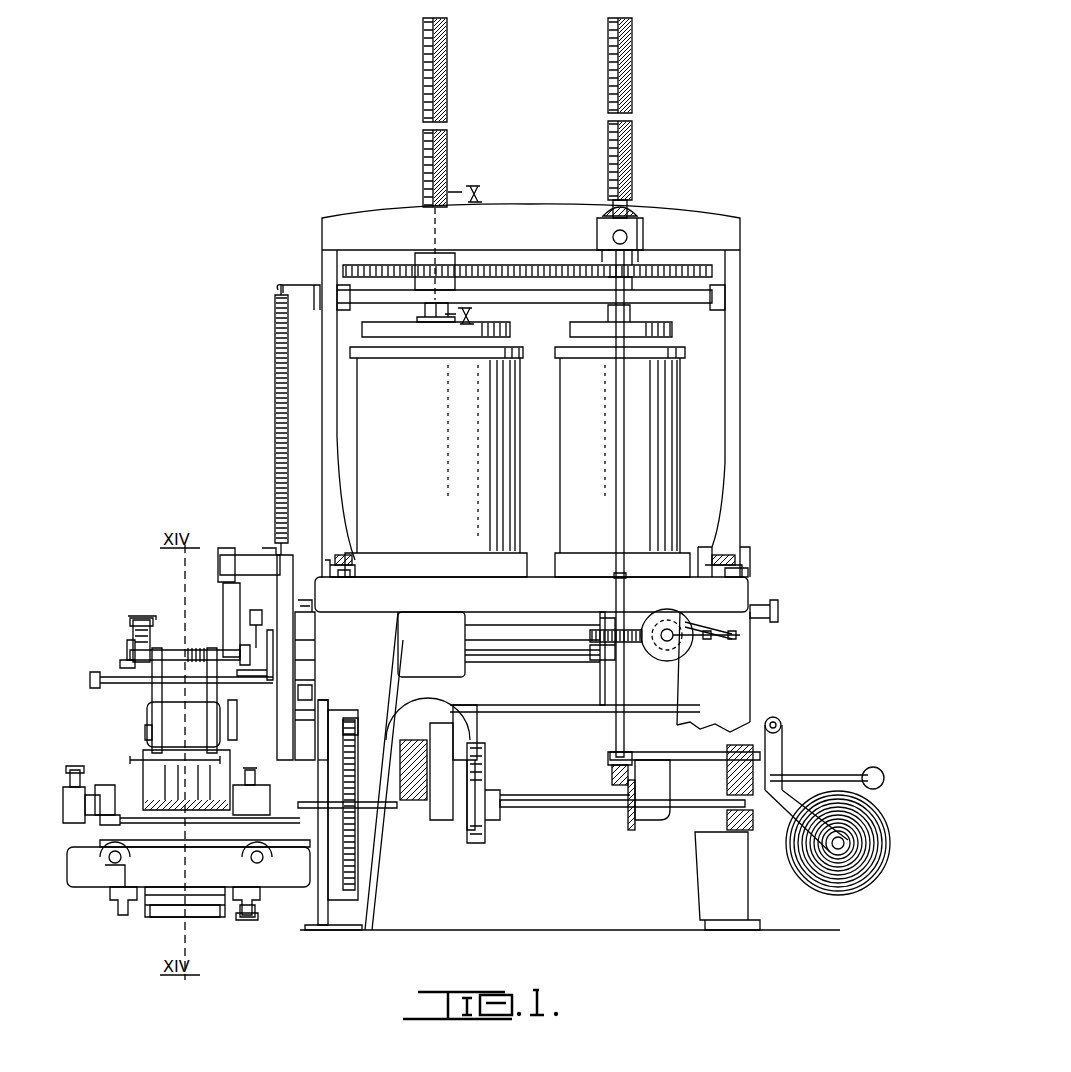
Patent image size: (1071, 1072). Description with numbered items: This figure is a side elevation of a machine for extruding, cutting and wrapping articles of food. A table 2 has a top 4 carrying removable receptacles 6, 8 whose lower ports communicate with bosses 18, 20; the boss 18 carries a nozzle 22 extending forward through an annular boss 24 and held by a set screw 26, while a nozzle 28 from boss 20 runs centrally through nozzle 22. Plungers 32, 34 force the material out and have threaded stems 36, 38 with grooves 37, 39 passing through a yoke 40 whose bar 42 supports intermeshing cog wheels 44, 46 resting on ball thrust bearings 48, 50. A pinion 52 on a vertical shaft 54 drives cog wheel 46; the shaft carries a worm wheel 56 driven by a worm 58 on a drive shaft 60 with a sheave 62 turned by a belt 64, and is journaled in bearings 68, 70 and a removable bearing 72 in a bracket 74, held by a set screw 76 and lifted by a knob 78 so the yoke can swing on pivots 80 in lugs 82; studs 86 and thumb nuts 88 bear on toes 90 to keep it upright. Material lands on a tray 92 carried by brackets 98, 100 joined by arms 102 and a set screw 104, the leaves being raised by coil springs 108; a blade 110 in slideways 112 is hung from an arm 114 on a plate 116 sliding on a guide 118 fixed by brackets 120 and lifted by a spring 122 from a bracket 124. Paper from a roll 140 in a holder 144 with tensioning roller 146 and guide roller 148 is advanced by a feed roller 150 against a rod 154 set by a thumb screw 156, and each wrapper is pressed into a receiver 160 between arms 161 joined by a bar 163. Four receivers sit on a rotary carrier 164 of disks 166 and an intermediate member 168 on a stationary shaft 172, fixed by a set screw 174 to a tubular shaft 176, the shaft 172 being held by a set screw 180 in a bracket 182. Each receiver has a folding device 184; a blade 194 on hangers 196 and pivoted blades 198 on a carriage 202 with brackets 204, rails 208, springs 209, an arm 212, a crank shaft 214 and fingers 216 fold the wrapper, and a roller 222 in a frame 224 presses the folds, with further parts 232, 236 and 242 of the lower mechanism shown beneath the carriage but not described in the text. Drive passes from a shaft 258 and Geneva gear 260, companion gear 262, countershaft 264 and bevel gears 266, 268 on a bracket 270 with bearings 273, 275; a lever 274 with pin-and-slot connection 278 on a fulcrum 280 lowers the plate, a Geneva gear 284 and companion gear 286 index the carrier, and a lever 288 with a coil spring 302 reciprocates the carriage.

The table 2 is at (740, 688).
The table top 4 is at (531, 594).
The removable receptacle 6 is at (436, 462).
The removable receptacle 8 is at (622, 462).
The boss 18 is at (431, 644).
The boss 20 is at (600, 662).
The nozzle 22 is at (268, 676).
The annular boss 24 is at (312, 628).
The set screw 26 is at (306, 610).
The nozzle 28 is at (535, 655).
The plunger 32 is at (447, 337).
The plunger 34 is at (672, 328).
The threaded plunger stem 36 is at (423, 52).
The longitudinal groove 37 is at (436, 82).
The threaded plunger stem 38 is at (631, 68).
The longitudinal groove 39 is at (616, 42).
The yoke 40 is at (746, 306).
The longitudinal bar 42 is at (562, 296).
The cog wheel 44 is at (340, 268).
The cog wheel 46 is at (712, 267).
The ball thrust bearing 48 is at (415, 258).
The ball thrust bearing 50 is at (608, 264).
The pinion 52 is at (612, 256).
The vertical shaft 54 is at (616, 439).
The worm wheel 56 is at (622, 630).
The worm 58 is at (740, 634).
The drive shaft 60 is at (680, 638).
The sheave 62 is at (665, 660).
The belt 64 is at (702, 628).
The bearing 68 is at (608, 762).
The bearing 70 is at (602, 612).
The removable bearing 72 is at (643, 246).
The bracket 74 is at (643, 232).
The set screw 76 is at (612, 232).
The knob 78 is at (637, 212).
The pivot 80 is at (752, 560).
The lug 82 is at (340, 565).
The stud 86 is at (352, 560).
The thumb nut 88 is at (730, 563).
The toe 90 is at (355, 576).
The tray 92 is at (120, 664).
The bracket 98 is at (132, 620).
The bracket 100 is at (254, 655).
The arm 102 is at (127, 645).
The set screw 104 is at (256, 610).
The coil spring 108 is at (150, 630).
The blade 110 is at (226, 552).
The slideway 112 is at (224, 602).
The arm 114 is at (238, 555).
The plate 116 is at (268, 555).
The guide 118 is at (292, 565).
The bracket 120 is at (312, 656).
The coil spring 122 is at (275, 355).
The bracket 124 is at (283, 286).
The paper roll 140 is at (842, 895).
The holder 144 is at (784, 760).
The tensioning roller 146 is at (870, 767).
The guide roller 148 is at (782, 722).
The feed roller 150 is at (446, 716).
The rod 154 is at (575, 721).
The thumb screw 156 is at (778, 610).
The trough-shaped receiver 160 is at (147, 712).
The arm 161 is at (100, 682).
The transverse bar 163 is at (90, 678).
The rotary carrier 164 is at (238, 736).
The disk 166 is at (145, 733).
The intermediate member 168 is at (130, 758).
The stationary shaft 172 is at (63, 808).
The set screw 174 is at (252, 768).
The rotary tubular shaft 176 is at (269, 859).
The set screw 180 is at (70, 772).
The bracket 182 is at (67, 880).
The folding device 184 is at (175, 935).
The blade 194 is at (214, 782).
The hanger 196 is at (184, 700).
The pivoted blade 198 is at (200, 650).
The carriage 202 is at (112, 868).
The bracket 204 is at (216, 786).
The rail 208 is at (118, 876).
The coil spring 209 is at (100, 822).
The arm 212 is at (105, 785).
The crank shaft 214 is at (186, 780).
The finger 216 is at (188, 786).
The roller 222 is at (160, 826).
The U-shaped frame 224 is at (118, 900).
The block 232 is at (250, 916).
The plate 236 is at (246, 921).
The bracket 242 is at (262, 908).
The shaft 258 is at (416, 742).
The Geneva gear 260 is at (478, 728).
The companion gear 262 is at (487, 786).
The countershaft 264 is at (580, 810).
The bevel gear wheel 266 is at (630, 830).
The bevel gear 268 is at (612, 778).
The bracket 270 is at (431, 778).
The bearing 273 is at (652, 820).
The lever 274 is at (322, 740).
The bearing 275 is at (718, 836).
The pin-and-slot connection 278 is at (316, 722).
The fulcrum 280 is at (346, 742).
The Geneva gear 284 is at (358, 832).
The companion gear 286 is at (362, 896).
The lever 288 is at (360, 830).
The coil spring 302 is at (380, 812).